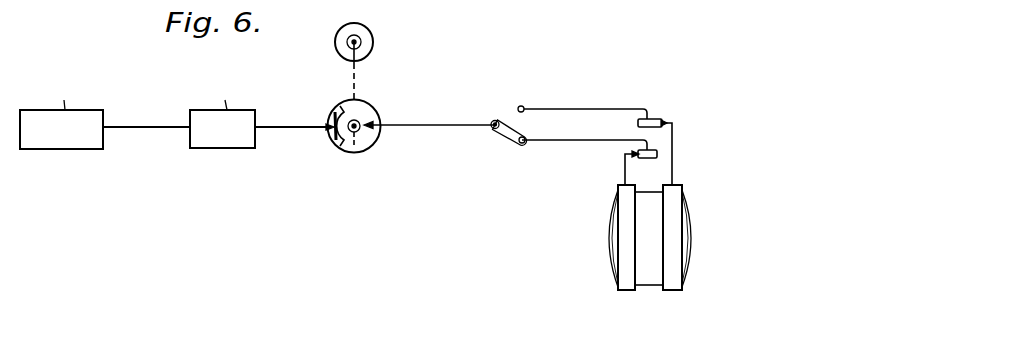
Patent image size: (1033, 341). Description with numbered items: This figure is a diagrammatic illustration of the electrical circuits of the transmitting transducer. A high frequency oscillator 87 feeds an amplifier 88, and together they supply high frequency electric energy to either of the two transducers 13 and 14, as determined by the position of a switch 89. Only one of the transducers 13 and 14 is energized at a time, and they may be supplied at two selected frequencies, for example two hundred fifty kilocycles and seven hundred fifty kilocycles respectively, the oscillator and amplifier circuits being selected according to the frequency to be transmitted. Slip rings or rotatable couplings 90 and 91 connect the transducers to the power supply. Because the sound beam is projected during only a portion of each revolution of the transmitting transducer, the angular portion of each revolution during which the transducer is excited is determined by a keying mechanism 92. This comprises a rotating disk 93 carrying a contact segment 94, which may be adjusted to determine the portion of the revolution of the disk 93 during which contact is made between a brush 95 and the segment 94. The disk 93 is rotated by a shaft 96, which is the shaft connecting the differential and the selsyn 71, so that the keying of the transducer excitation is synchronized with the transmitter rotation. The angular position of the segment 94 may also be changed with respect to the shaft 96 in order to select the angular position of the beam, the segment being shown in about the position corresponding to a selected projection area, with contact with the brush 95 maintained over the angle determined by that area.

The high frequency oscillator 87 is at (62, 142).
The amplifier 88 is at (222, 142).
The selsyn 71 is at (367, 32).
The shaft 96 is at (353, 90).
The keying mechanism 92 is at (395, 98).
The rotating disk 93 is at (371, 148).
The contact segment 94 is at (336, 137).
The brush 95 is at (329, 124).
The switch 89 is at (505, 132).
The slip ring or rotatable coupling 90 is at (655, 150).
The slip ring or rotatable coupling 91 is at (652, 120).
The transducer 13 is at (627, 290).
The transducer 14 is at (675, 290).